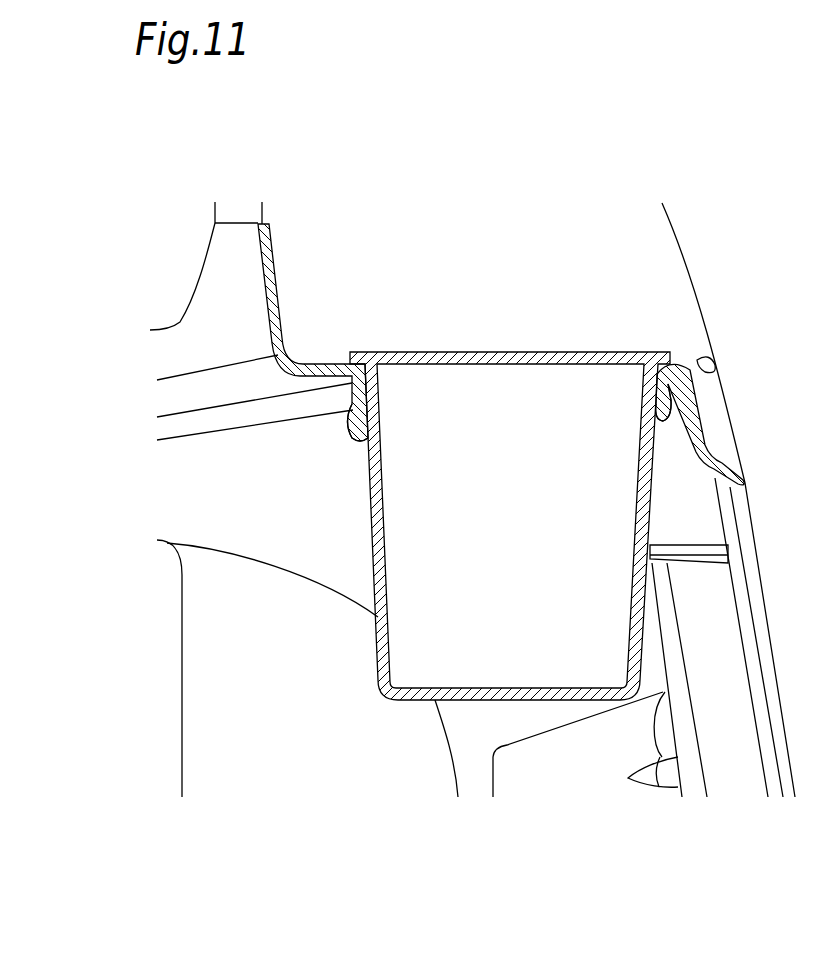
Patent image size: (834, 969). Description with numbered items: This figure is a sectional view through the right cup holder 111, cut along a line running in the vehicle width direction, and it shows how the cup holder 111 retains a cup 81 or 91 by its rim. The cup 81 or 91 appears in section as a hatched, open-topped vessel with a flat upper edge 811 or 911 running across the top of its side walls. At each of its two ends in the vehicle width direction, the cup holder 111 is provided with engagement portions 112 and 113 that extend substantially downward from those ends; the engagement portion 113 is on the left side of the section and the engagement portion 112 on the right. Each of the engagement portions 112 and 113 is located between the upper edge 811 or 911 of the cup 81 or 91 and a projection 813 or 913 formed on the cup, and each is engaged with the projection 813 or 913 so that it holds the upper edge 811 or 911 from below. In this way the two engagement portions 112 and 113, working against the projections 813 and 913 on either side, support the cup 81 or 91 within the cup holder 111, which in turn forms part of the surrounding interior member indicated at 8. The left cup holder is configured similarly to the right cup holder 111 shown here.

The vehicle interior member 8 is at (730, 577).
The cup 81 is at (510, 424).
The cup 91 is at (503, 395).
The upper edge 811 is at (501, 317).
The upper edge 911 is at (360, 356).
The projection 813 is at (496, 451).
The projection 913 is at (354, 424).
The cup holder 111 is at (683, 341).
The engagement portion 112 is at (663, 393).
The engagement portion 113 is at (353, 389).